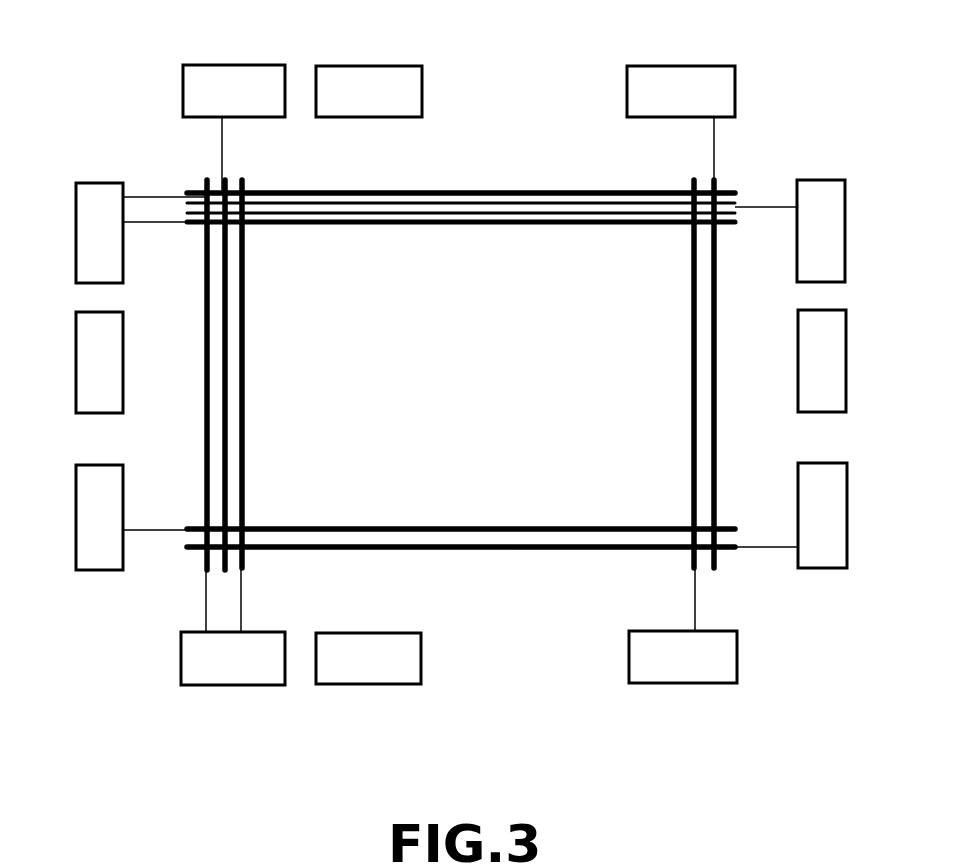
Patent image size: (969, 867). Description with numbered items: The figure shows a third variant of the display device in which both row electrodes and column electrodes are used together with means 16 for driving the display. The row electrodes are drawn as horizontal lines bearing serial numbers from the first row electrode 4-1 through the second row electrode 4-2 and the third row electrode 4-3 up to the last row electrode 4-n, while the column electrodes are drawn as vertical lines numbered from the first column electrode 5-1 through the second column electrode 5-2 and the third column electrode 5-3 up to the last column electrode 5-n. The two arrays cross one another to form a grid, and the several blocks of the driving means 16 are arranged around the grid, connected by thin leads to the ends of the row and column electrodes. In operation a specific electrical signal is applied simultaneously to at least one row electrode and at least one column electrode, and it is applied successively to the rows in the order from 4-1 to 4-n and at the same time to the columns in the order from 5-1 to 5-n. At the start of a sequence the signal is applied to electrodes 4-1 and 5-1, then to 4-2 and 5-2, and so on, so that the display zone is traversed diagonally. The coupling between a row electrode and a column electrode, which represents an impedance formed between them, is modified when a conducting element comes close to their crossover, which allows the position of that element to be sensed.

The means for driving the display 16 is at (236, 65).
The first row electrode 4-1 is at (187, 192).
The second row electrode 4-2 is at (733, 205).
The third row electrode 4-3 is at (187, 226).
The nth row electrode 4-n is at (188, 550).
The first column electrode 5-1 is at (203, 572).
The second column electrode 5-2 is at (228, 182).
The third column electrode 5-3 is at (246, 568).
The nth column electrode 5-n is at (716, 182).